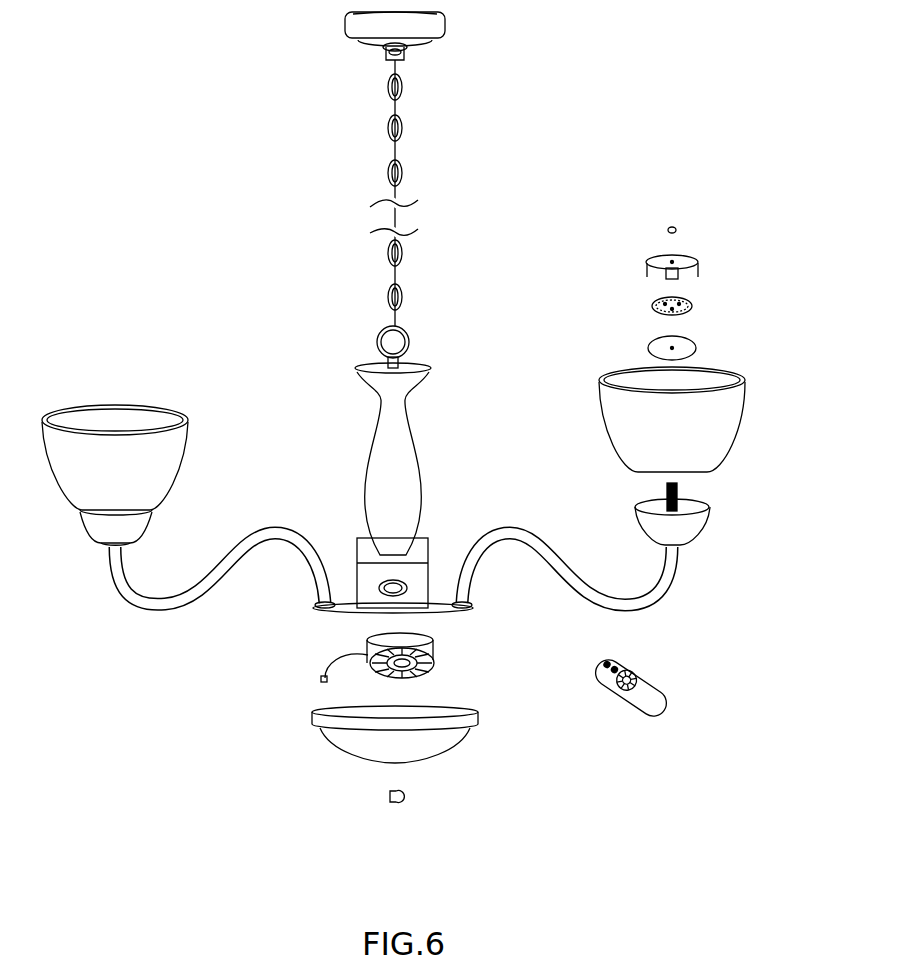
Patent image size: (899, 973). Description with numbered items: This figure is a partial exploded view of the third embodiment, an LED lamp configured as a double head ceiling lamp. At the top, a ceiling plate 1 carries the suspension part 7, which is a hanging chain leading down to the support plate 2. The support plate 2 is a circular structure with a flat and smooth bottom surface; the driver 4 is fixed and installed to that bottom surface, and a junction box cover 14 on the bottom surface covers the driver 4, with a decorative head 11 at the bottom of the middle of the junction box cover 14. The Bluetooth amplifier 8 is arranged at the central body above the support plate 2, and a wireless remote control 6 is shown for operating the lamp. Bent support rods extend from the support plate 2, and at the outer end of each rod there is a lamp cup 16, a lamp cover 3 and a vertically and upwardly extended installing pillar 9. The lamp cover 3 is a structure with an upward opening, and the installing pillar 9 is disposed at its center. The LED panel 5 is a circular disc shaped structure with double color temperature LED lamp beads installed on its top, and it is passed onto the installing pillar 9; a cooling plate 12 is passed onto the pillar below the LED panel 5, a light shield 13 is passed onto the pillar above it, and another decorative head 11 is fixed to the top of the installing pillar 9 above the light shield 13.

The ceiling plate 1 is at (437, 27).
The support plate 2 is at (440, 609).
The lamp cover 3 is at (700, 430).
The driver 4 is at (434, 653).
The LED panel 5 is at (692, 306).
The wireless remote control 6 is at (650, 700).
The suspension part 7 is at (402, 132).
The Bluetooth amplifier 8 is at (454, 522).
The installing pillar 9 is at (680, 488).
The decorative head 11 is at (678, 230).
The cooling plate 12 is at (685, 348).
The light shield 13 is at (700, 262).
The junction box cover 14 is at (433, 738).
The lamp cup 16 is at (688, 525).